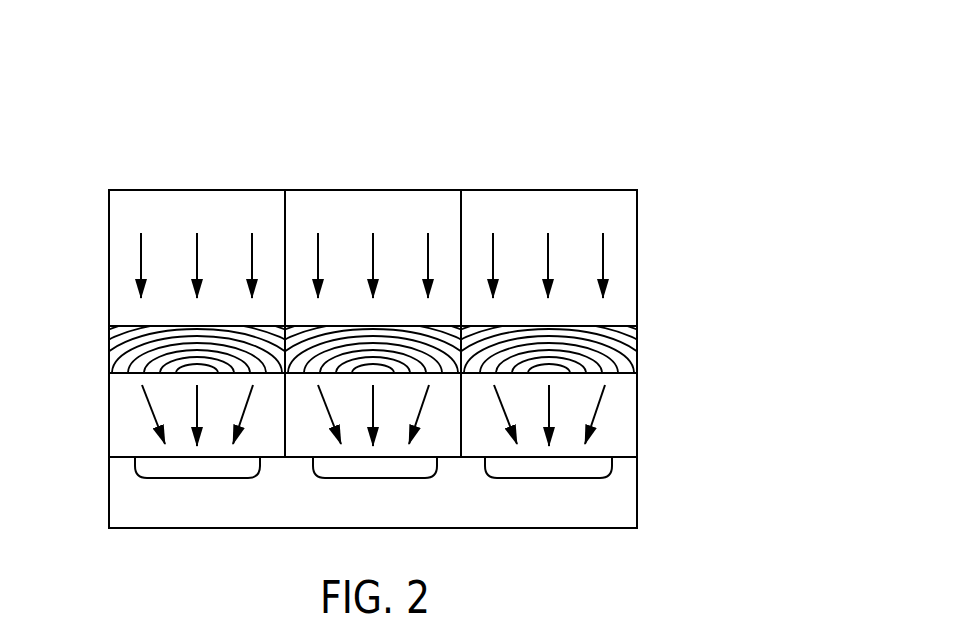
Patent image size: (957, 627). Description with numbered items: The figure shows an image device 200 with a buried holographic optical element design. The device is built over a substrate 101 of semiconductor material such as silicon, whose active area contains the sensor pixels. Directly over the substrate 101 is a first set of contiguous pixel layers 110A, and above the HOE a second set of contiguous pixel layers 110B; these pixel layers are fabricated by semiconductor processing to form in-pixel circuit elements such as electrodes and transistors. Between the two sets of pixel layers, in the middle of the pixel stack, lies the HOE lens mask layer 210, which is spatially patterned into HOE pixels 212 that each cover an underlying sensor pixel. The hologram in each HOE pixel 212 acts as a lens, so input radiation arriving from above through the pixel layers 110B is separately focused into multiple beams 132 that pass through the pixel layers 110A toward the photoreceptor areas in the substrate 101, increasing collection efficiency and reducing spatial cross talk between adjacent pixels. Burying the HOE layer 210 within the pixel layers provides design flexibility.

The image device 200 is at (113, 58).
The second set of contiguous pixel layers 110B is at (645, 190).
The HOE lens mask layer 210 is at (635, 346).
The HOE pixels 212 is at (178, 327).
The first set of contiguous pixel layers 110A is at (645, 373).
The beams 132 is at (150, 401).
The substrate 101 is at (637, 497).